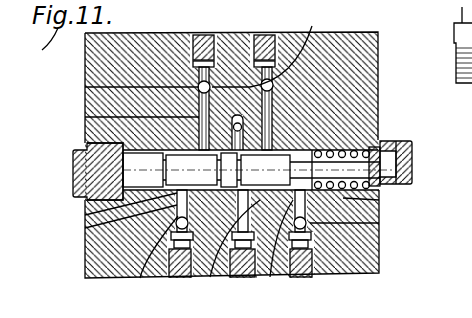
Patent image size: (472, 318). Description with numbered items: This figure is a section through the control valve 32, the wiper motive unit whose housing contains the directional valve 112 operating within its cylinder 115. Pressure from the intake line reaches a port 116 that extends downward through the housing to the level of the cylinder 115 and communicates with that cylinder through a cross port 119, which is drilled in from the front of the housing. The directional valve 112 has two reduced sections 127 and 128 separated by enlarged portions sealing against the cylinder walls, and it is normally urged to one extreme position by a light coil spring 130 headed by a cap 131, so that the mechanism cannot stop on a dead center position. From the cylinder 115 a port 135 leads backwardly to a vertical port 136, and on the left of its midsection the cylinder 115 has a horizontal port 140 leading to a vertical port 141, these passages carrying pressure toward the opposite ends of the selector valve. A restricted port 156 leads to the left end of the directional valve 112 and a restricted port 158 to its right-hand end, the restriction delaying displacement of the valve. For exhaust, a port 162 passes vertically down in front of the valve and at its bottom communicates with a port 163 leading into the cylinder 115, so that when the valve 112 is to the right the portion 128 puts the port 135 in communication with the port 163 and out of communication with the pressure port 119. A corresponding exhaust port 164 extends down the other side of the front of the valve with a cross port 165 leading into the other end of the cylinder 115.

The control valve 32 is at (90, 64).
The directional valve 112 is at (133, 169).
The cylinder 115 is at (378, 120).
The port 116 is at (250, 132).
The cross port 119 is at (378, 98).
The reduced section 127 is at (85, 215).
The reduced section 128 is at (267, 278).
The light coil spring 130 is at (413, 172).
The cap 131 is at (413, 158).
The port 135 is at (250, 133).
The vertical port 136 is at (270, 49).
The horizontal port 140 is at (85, 118).
The vertical port 141 is at (85, 88).
The restricted port 156 is at (193, 76).
The restricted port 158 is at (246, 76).
The exhaust port 162 is at (379, 223).
The port 163 is at (379, 200).
The exhaust port 164 is at (140, 278).
The cross port 165 is at (85, 229).